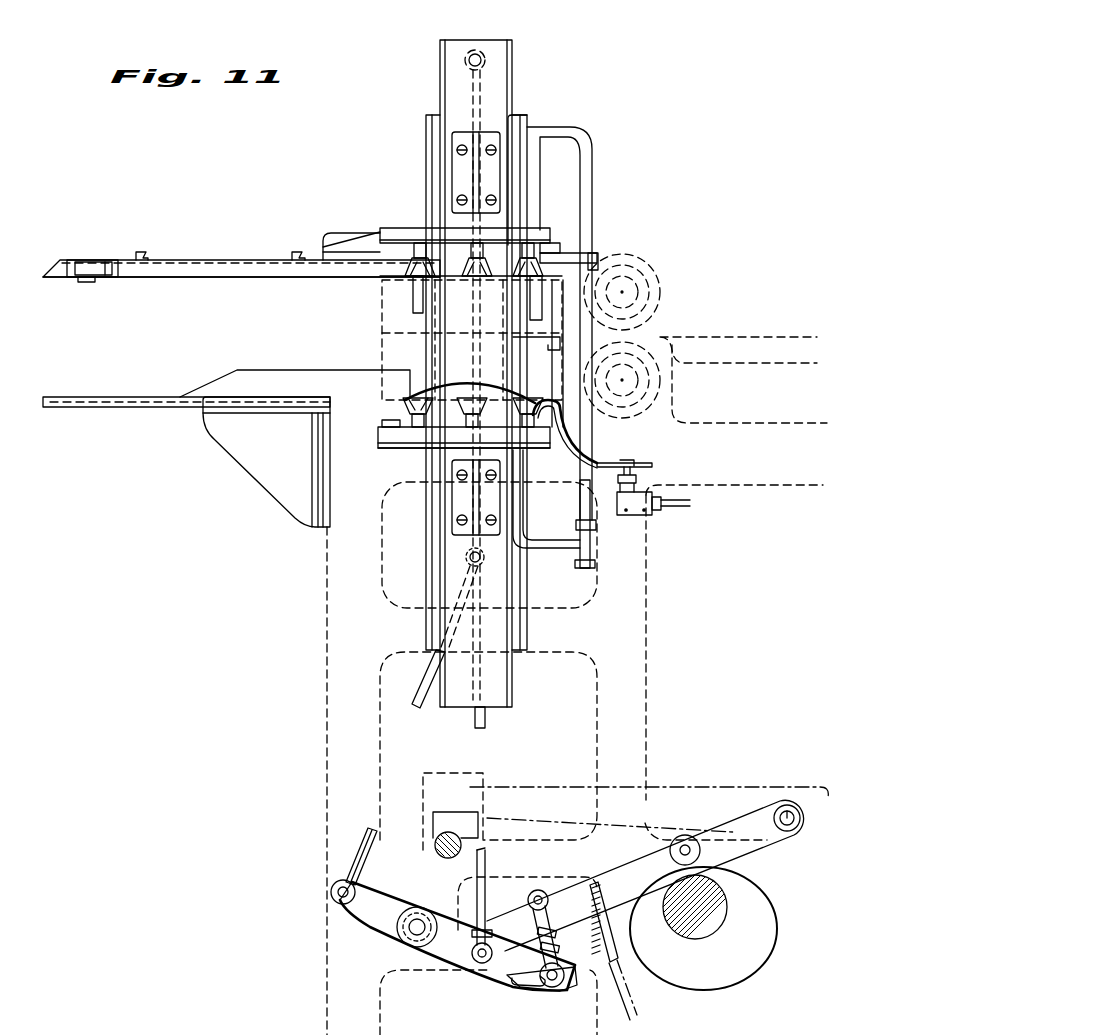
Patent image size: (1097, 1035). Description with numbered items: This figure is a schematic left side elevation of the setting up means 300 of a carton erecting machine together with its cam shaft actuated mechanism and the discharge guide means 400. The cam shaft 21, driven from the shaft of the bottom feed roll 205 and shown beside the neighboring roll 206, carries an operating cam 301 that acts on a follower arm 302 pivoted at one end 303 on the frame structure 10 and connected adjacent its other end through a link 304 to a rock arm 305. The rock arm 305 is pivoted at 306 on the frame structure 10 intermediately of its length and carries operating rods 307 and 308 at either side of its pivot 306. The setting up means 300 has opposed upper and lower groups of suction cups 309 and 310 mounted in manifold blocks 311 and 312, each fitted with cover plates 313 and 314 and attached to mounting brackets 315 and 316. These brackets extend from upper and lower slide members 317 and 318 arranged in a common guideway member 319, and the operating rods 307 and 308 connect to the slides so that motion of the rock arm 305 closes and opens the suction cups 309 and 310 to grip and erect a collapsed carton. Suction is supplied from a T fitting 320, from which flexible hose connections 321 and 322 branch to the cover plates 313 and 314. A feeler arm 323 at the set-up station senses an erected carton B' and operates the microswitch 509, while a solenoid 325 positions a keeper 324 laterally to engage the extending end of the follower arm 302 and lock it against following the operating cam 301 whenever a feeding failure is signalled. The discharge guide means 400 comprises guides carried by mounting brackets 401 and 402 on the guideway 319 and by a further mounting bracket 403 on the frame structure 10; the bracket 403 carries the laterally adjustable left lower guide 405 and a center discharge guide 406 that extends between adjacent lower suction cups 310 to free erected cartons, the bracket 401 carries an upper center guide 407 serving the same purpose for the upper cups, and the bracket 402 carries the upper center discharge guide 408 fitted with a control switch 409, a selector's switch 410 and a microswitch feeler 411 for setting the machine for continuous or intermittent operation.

The supporting frame structure 10 is at (325, 674).
The cam shaft 21 is at (703, 893).
The bottom feed roll 205 is at (665, 388).
The roller 206 is at (665, 288).
The setting up means 300 is at (437, 66).
The operating cam 301 is at (733, 970).
The follower arm 302 is at (555, 790).
The pivot end of follower arm 303 is at (786, 805).
The link 304 is at (530, 982).
The rock arm 305 is at (475, 976).
The rock arm pivot 306 is at (400, 942).
The operating rod 307 is at (476, 876).
The operating rod 308 is at (368, 832).
The upper group of suction cups 309 is at (410, 280).
The lower group of suction cups 310 is at (405, 398).
The manifold block 311 is at (380, 236).
The manifold block 312 is at (380, 432).
The cover plate 313 is at (405, 228).
The cover plate 314 is at (388, 450).
The mounting bracket 315 is at (455, 160).
The mounting bracket 316 is at (453, 497).
The upper slide member 317 is at (452, 90).
The lower slide member 318 is at (453, 545).
The guideway member 319 is at (514, 123).
The T fitting 320 is at (591, 548).
The flexible hose connection 321 is at (593, 148).
The flexible hose connection 322 is at (552, 552).
The feeler arm 323 is at (566, 444).
The solenoid operated keeper 324 is at (455, 812).
The solenoid 325 is at (433, 773).
The discharge guide means 400 is at (226, 260).
The mounting bracket 401 is at (563, 250).
The mounting bracket 402 is at (380, 226).
The mounting bracket 403 is at (254, 475).
The left lower guide 405 is at (278, 370).
The center discharge guide 406 is at (438, 383).
The upper center guide 407 is at (590, 260).
The center discharge guide 408 is at (228, 278).
The control switch 409 is at (297, 252).
The selector's switch 410 is at (140, 252).
The microswitch feeler 411 is at (88, 265).
The microswitch 509 is at (652, 511).
The erected carton B' is at (361, 314).